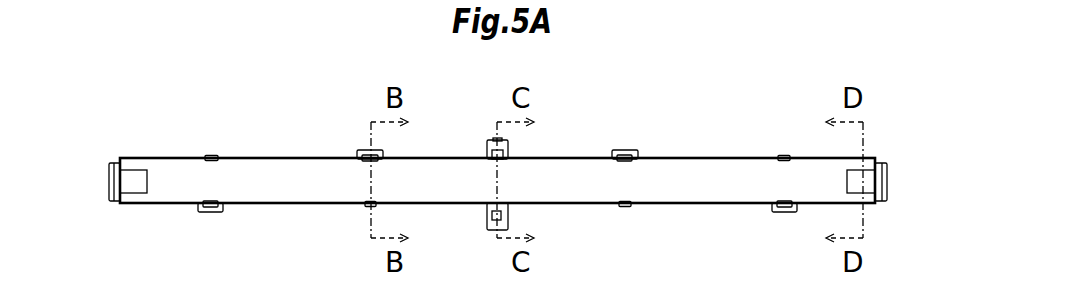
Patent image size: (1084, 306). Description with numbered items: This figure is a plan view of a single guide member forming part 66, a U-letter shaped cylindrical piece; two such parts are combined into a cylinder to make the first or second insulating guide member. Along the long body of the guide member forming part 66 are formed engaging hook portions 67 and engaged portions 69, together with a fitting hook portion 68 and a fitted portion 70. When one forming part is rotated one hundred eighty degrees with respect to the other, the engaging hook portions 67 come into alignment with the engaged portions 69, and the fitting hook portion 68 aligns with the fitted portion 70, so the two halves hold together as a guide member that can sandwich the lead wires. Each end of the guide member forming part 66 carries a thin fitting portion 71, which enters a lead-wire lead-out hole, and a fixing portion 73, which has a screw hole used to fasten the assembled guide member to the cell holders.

The guide member forming part 66 is at (558, 204).
The engaging hook portion 67 is at (211, 154).
The fitting hook portion 68 is at (488, 152).
The engaged portion 69 is at (358, 151).
The fitted portion 70 is at (488, 230).
The fitting portion 71 is at (118, 160).
The fixing portion 73 is at (128, 182).